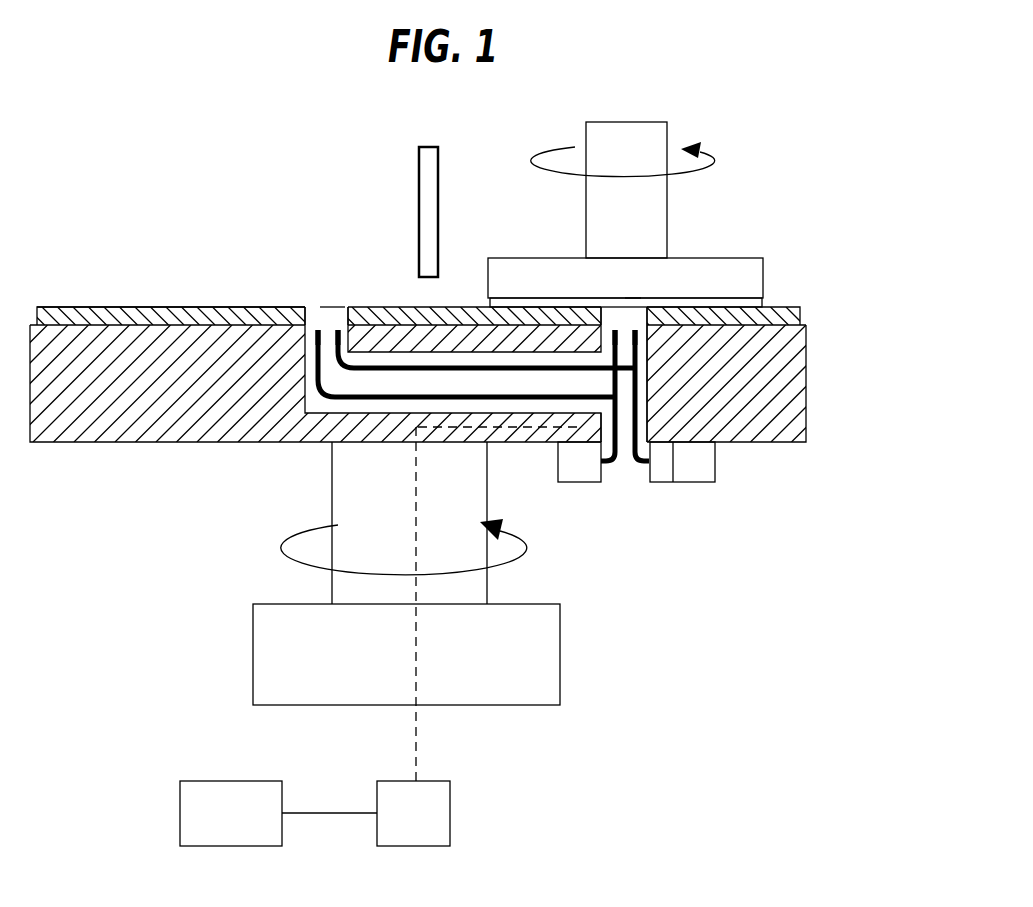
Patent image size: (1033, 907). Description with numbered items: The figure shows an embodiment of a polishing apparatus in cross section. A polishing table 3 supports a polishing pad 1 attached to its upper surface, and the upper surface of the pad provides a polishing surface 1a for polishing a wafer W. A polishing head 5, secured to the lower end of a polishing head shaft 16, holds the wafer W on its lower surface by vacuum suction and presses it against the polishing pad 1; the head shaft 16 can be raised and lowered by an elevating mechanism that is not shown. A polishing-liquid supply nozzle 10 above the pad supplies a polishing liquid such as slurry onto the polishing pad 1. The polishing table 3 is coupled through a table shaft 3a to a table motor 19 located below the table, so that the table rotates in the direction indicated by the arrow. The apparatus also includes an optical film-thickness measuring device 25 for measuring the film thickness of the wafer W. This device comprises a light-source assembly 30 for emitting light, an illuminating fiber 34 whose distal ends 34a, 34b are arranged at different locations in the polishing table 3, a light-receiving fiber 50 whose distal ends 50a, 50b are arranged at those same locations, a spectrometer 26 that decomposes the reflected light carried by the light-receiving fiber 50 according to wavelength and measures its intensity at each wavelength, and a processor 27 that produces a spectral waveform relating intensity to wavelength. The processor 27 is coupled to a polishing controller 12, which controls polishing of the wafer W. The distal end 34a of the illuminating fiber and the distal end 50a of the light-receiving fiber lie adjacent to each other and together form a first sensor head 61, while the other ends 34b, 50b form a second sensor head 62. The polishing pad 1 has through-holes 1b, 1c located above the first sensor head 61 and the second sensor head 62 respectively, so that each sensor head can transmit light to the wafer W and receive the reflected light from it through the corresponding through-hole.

The polishing pad 1 is at (190, 307).
The polishing surface 1a is at (110, 307).
The through-hole 1b is at (605, 320).
The through-hole 1c is at (318, 307).
The polishing table 3 is at (118, 442).
The table shaft 3a is at (332, 583).
The polishing head 5 is at (750, 258).
The polishing-liquid supply nozzle 10 is at (418, 197).
The polishing controller 12 is at (180, 803).
The polishing head shaft 16 is at (586, 137).
The table motor 19 is at (560, 661).
The optical film-thickness measuring device 25 is at (685, 500).
The spectrometer 26 is at (583, 482).
The processor 27 is at (450, 813).
The light-source assembly 30 is at (715, 460).
The illuminating fiber 34 is at (640, 385).
The distal end of illuminating fiber 34a is at (640, 325).
The distal end of illuminating fiber 34b is at (345, 307).
The light-receiving fiber 50 is at (340, 403).
The distal end of light-receiving fiber 50a is at (618, 318).
The distal end of light-receiving fiber 50b is at (313, 308).
The first sensor head 61 is at (633, 290).
The second sensor head 62 is at (333, 298).
The wafer W is at (763, 300).